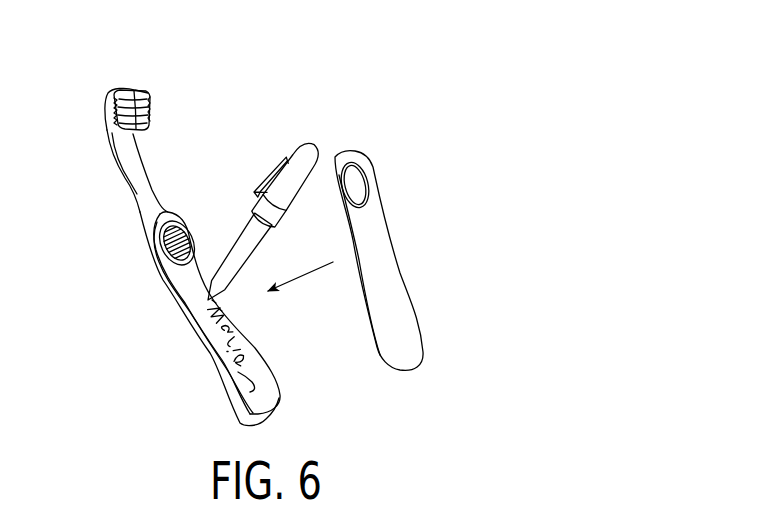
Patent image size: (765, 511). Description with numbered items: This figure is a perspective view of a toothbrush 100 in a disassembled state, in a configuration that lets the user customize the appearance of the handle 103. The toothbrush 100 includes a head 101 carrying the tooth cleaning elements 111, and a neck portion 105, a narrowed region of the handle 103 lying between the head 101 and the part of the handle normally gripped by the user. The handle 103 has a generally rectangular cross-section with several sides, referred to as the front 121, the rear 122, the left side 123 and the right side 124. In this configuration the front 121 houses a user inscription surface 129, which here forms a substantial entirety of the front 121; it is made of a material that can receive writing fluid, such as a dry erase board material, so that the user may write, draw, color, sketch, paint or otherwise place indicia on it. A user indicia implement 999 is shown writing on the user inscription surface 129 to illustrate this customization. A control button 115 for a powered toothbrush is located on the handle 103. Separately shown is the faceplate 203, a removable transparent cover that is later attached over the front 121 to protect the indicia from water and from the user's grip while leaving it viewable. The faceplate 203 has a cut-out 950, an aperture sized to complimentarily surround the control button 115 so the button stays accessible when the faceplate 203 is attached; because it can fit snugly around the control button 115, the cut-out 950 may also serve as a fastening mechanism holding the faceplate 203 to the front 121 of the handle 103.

The toothbrush 100 is at (190, 235).
The head 101 is at (163, 72).
The handle 103 is at (235, 316).
The neck portion 105 is at (128, 193).
The tooth cleaning elements 111 is at (150, 110).
The control button 115 is at (181, 224).
The front 121 is at (268, 380).
The rear 122 is at (200, 340).
The left side 123 is at (220, 378).
The right side 124 is at (267, 354).
The user inscription surface 129 is at (230, 328).
The faceplate 203 is at (387, 261).
The cut-out 950 is at (366, 184).
The user indicia implement 999 is at (305, 125).